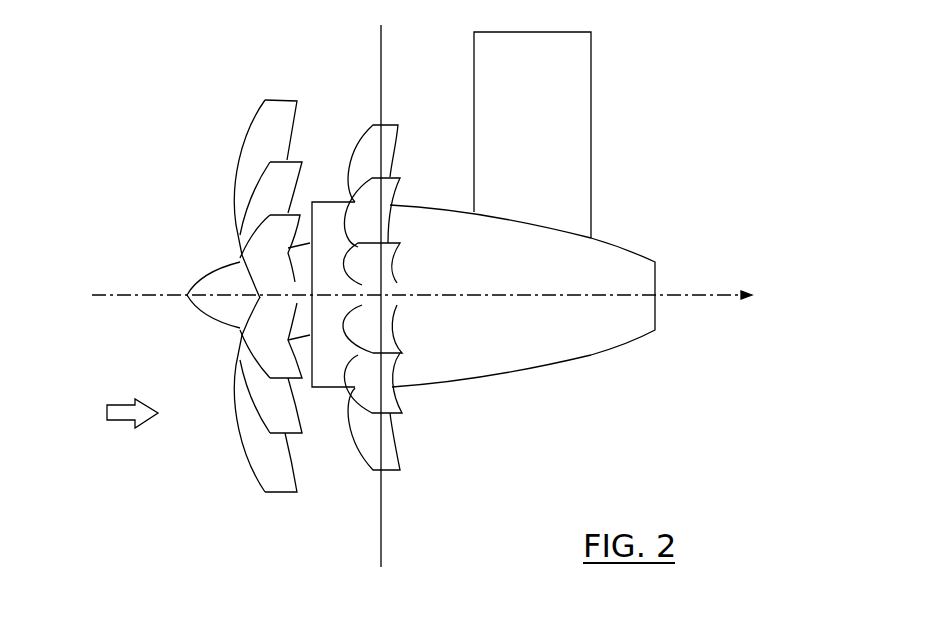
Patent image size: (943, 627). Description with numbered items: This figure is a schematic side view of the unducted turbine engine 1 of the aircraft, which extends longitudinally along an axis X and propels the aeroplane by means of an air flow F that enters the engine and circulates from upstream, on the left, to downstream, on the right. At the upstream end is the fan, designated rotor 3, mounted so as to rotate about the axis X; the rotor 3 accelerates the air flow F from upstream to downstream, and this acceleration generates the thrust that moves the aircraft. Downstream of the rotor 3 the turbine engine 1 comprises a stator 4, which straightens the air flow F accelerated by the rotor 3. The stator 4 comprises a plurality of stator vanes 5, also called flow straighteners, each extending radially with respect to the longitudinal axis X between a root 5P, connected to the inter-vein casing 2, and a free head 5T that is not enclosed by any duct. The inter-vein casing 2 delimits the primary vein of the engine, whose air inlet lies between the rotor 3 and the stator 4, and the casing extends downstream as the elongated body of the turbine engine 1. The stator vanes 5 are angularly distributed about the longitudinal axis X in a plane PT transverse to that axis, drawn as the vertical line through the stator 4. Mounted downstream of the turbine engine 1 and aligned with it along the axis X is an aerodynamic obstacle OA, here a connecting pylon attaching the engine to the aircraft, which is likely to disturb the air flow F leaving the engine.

The turbine engine 1 is at (116, 125).
The inter-vein casing 2 is at (603, 342).
The rotor 3 is at (283, 498).
The stator 4 is at (388, 484).
The stator vanes 5 is at (393, 150).
The root 5P is at (393, 387).
The free head 5T is at (402, 472).
The transverse plane PT is at (387, 40).
The aerodynamic obstacle OA is at (591, 123).
The longitudinal axis X is at (440, 299).
The air flow F is at (124, 414).